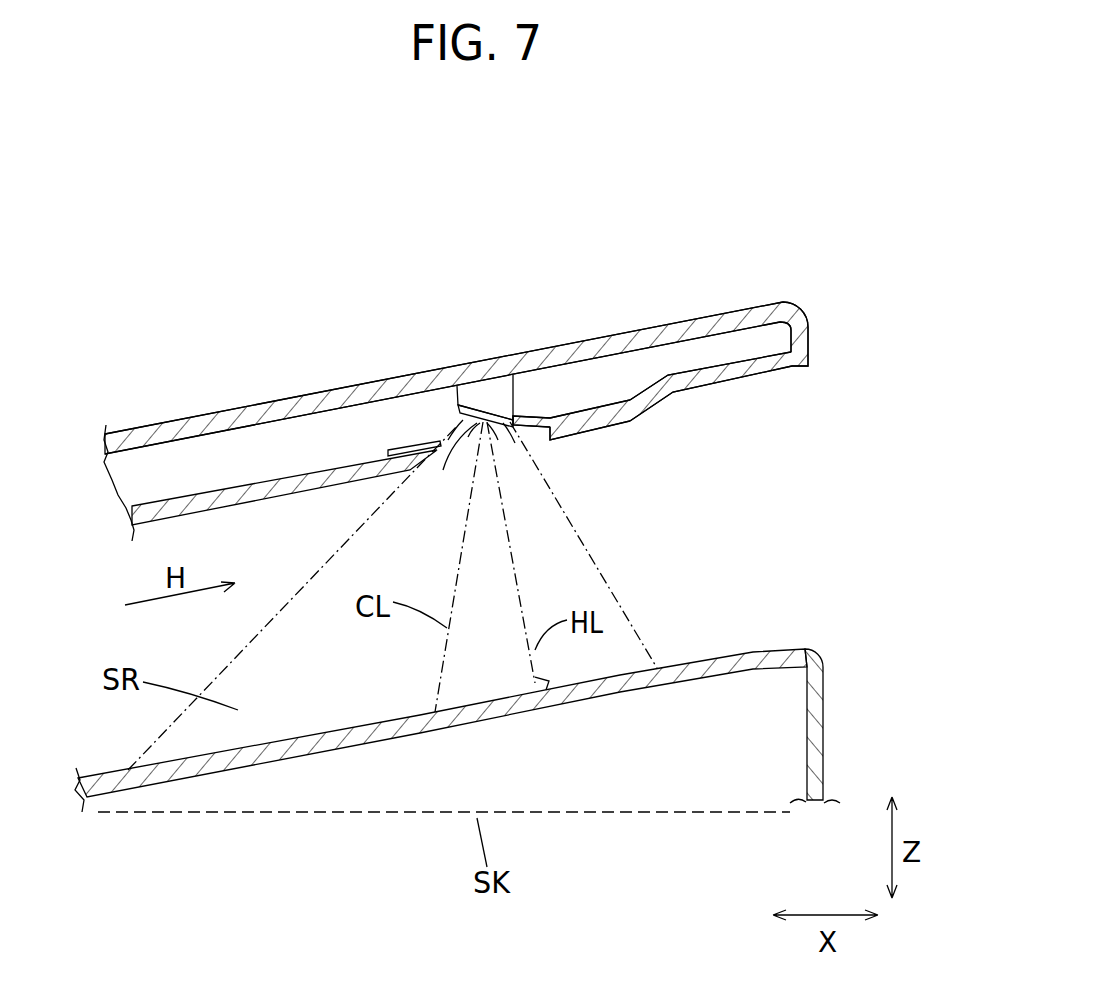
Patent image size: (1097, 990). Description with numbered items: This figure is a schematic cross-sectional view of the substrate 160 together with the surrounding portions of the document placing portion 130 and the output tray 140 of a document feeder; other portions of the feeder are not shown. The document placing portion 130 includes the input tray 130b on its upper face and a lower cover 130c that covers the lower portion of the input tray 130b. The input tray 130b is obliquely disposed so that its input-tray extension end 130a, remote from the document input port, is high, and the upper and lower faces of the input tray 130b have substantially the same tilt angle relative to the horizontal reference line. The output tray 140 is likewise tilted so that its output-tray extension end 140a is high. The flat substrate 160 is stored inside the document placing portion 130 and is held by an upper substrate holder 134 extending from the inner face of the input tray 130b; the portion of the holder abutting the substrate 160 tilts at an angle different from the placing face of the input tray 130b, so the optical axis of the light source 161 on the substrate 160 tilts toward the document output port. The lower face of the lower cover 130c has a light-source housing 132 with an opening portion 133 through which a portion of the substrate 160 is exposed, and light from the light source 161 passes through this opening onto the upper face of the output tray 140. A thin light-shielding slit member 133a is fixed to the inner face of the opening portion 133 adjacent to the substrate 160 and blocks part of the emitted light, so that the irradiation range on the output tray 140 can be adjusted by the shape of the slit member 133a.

The document placing portion 130 is at (507, 383).
The input-tray extension end 130a is at (806, 328).
The input tray 130b is at (610, 330).
The lower cover 130c is at (660, 402).
The light-source housing 132 is at (617, 433).
The opening portion 133 is at (533, 442).
The slit member 133a is at (424, 436).
The upper substrate holder 134 is at (488, 385).
The output tray 140 is at (501, 698).
The output-tray extension end 140a is at (825, 700).
The substrate 160 is at (523, 412).
The light source 161 is at (477, 423).